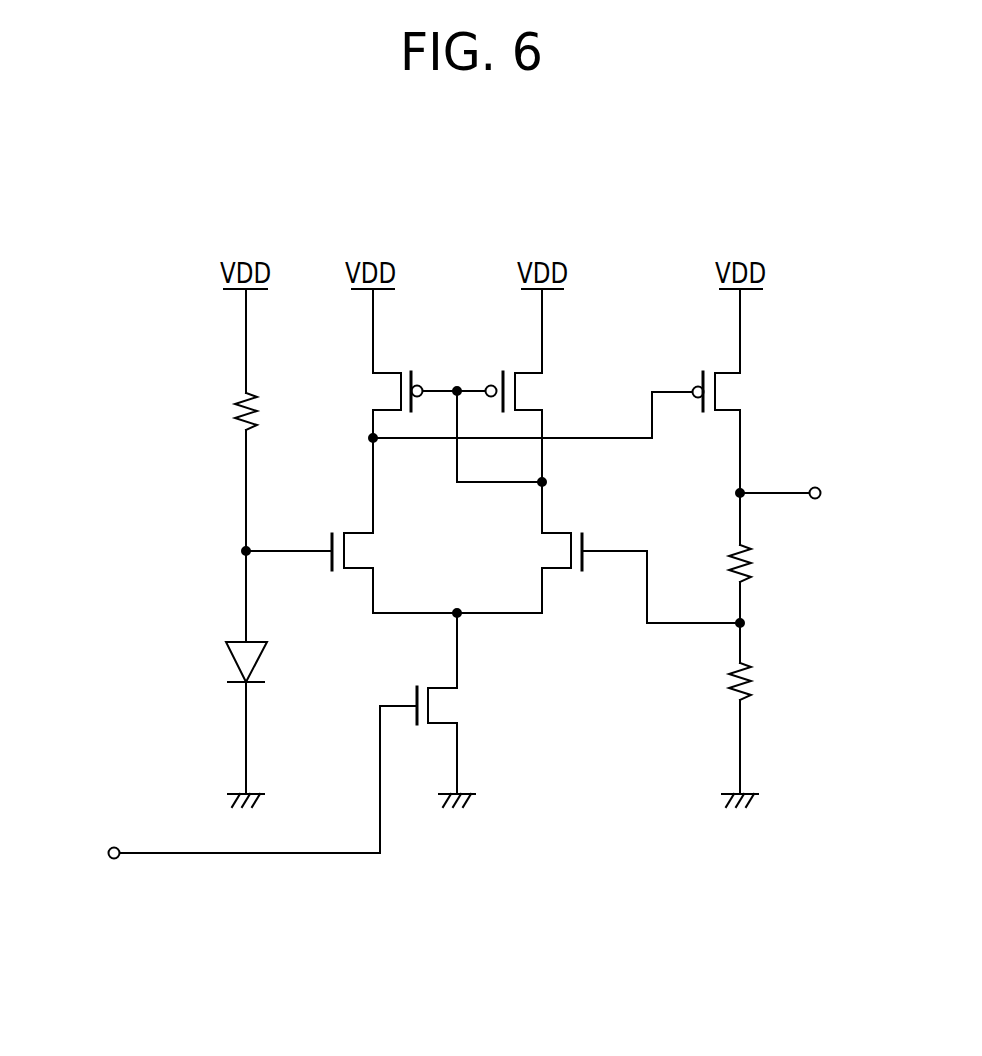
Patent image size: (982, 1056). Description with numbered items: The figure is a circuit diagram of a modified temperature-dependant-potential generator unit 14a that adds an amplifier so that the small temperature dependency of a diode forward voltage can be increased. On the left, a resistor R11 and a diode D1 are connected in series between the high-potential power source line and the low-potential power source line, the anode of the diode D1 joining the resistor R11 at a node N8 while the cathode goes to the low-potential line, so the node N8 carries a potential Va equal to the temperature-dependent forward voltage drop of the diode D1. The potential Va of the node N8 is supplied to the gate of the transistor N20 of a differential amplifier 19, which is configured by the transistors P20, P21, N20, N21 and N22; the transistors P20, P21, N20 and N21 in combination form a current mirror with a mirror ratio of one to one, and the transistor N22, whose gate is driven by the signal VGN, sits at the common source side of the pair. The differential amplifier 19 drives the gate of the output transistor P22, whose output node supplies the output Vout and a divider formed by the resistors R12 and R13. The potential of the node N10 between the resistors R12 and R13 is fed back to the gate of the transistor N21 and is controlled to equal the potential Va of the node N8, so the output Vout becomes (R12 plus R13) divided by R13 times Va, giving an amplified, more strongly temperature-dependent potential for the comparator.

The differential amplifier 19 is at (585, 262).
The temperature-dependant-potential generator unit 14a is at (725, 240).
The resistor R11 is at (221, 411).
The resistor R12 is at (767, 563).
The resistor R13 is at (767, 681).
The diode D1 is at (222, 663).
The node N8 is at (243, 551).
The node N10 is at (745, 623).
The transistor N20 is at (335, 537).
The transistor N21 is at (594, 531).
The transistor N22 is at (418, 686).
The transistor P20 is at (415, 350).
The transistor P21 is at (499, 350).
The transistor P22 is at (706, 350).
The potential of the node N8 Va is at (268, 569).
The output Vout is at (802, 479).
The gate control signal VGN is at (215, 788).